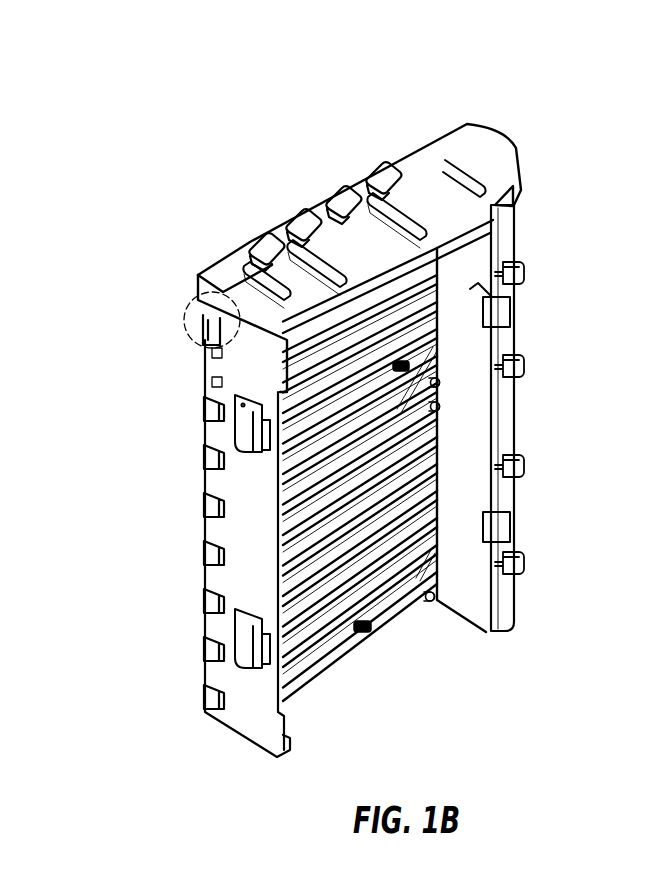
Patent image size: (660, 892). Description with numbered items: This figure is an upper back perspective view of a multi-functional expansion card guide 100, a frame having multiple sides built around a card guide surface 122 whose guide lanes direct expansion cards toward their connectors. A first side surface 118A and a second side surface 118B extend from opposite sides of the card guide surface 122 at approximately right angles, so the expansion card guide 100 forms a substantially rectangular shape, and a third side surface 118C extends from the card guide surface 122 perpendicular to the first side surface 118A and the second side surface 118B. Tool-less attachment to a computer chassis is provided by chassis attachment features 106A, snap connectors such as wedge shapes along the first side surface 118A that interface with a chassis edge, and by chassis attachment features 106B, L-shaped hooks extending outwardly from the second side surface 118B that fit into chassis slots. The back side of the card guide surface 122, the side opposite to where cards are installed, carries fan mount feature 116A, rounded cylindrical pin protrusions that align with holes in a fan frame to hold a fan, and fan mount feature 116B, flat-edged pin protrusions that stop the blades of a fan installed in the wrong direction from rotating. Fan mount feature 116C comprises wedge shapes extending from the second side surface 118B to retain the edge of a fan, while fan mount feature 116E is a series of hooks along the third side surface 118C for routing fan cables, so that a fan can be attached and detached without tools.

The expansion card guide 100 is at (268, 178).
The fan mount feature 116E is at (369, 183).
The third side surface 118C is at (420, 193).
The first side surface 118A is at (252, 490).
The second side surface 118B is at (467, 598).
The chassis attachment features 106A is at (240, 430).
The chassis attachment features 106B is at (525, 361).
The fan mount feature 116A is at (441, 410).
The fan mount feature 116B is at (404, 362).
The fan mount feature 116C is at (491, 300).
The card guide surface 122 is at (184, 305).